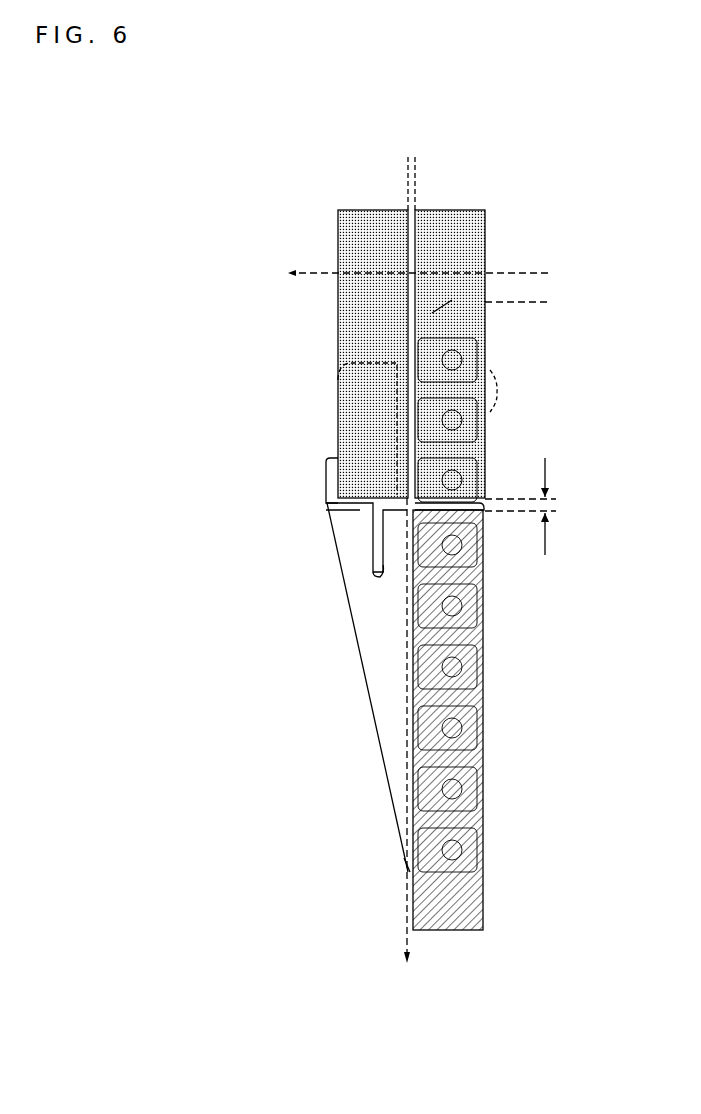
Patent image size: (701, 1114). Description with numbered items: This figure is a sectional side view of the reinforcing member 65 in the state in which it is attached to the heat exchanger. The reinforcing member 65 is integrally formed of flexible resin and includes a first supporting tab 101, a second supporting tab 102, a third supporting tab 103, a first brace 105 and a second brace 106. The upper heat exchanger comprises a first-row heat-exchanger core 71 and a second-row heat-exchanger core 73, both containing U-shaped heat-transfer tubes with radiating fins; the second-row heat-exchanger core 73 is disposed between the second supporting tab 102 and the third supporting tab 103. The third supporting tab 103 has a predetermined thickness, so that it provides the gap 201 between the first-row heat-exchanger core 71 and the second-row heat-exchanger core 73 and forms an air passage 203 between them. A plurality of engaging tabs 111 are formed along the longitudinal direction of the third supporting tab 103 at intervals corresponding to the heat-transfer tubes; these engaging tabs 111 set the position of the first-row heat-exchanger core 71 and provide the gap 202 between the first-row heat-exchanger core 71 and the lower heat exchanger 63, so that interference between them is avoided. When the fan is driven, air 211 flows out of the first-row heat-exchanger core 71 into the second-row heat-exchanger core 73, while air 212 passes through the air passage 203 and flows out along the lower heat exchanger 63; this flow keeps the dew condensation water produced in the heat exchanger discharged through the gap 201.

The second-row heat-exchanger core 73 is at (355, 222).
The first-row heat-exchanger core 71 is at (470, 230).
The gap 201 is at (455, 175).
The air 211 is at (451, 273).
The air 212 is at (523, 300).
The air passage 203 is at (338, 380).
The engaging tabs 111 is at (497, 392).
The second supporting tab 102 is at (330, 458).
The first supporting tab 101 is at (355, 504).
The second brace 106 is at (380, 578).
The first brace 105 is at (382, 717).
The third supporting tab 103 is at (405, 822).
The gap 202 is at (555, 506).
The lower heat exchanger 63 is at (485, 905).
The reinforcing member 65 is at (256, 950).